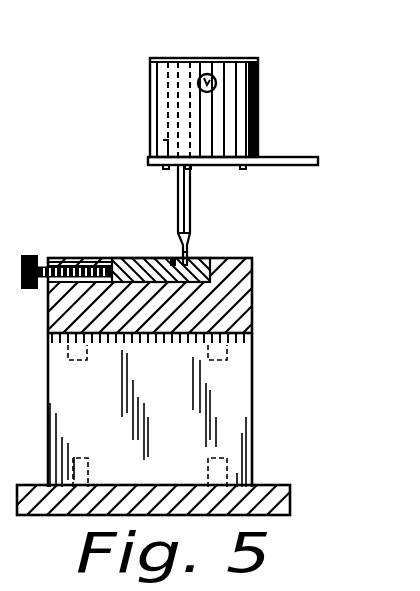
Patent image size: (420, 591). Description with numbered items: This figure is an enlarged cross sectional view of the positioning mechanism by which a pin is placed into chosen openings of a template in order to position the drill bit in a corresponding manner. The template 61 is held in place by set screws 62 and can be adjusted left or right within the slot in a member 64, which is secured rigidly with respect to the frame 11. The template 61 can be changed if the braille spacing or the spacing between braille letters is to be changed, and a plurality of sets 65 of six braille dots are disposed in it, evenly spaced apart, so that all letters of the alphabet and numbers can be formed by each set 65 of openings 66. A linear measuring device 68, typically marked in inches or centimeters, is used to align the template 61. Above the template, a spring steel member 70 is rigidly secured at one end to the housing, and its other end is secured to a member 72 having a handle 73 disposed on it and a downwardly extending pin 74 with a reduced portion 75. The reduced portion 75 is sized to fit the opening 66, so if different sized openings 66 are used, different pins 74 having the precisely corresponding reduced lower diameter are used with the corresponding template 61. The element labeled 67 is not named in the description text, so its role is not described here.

The frame 11 is at (278, 485).
The template 61 is at (125, 257).
The set screws 62 is at (30, 256).
The member 64 is at (238, 312).
The sets of six braille dots 65 is at (233, 239).
The openings 66 is at (197, 262).
The housing 67 is at (240, 392).
The linear measuring device 68 is at (88, 258).
The spring steel member 70 is at (279, 157).
The member 72 is at (258, 60).
The handle 73 is at (203, 74).
The pin 74 is at (195, 200).
The reduced portion 75 is at (178, 255).